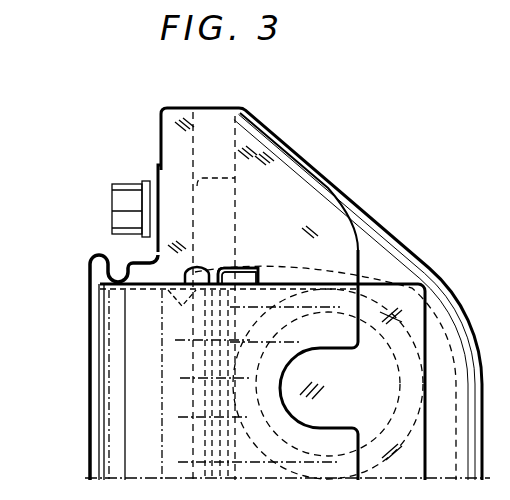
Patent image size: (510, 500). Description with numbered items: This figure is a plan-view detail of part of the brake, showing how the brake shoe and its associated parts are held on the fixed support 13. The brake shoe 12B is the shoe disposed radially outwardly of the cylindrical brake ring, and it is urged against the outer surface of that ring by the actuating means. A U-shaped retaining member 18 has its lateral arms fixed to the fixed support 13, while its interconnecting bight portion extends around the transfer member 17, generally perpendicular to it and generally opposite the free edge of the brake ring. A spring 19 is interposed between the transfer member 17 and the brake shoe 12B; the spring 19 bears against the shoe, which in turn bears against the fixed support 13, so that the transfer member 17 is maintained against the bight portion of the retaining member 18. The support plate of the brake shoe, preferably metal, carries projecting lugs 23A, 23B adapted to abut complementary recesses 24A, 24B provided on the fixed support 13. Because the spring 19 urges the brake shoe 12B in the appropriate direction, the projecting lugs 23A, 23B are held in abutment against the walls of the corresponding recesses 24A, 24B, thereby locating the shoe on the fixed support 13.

The fixed support 13 is at (434, 267).
The U-shaped retaining member 18 is at (99, 252).
The spring 19 is at (212, 260).
The projecting lug 23A is at (243, 272).
The projecting lug 23B is at (243, 272).
The recess 24A is at (252, 273).
The recess 24B is at (252, 273).
The transfer member 17 is at (158, 400).
The brake shoe 12B is at (392, 403).